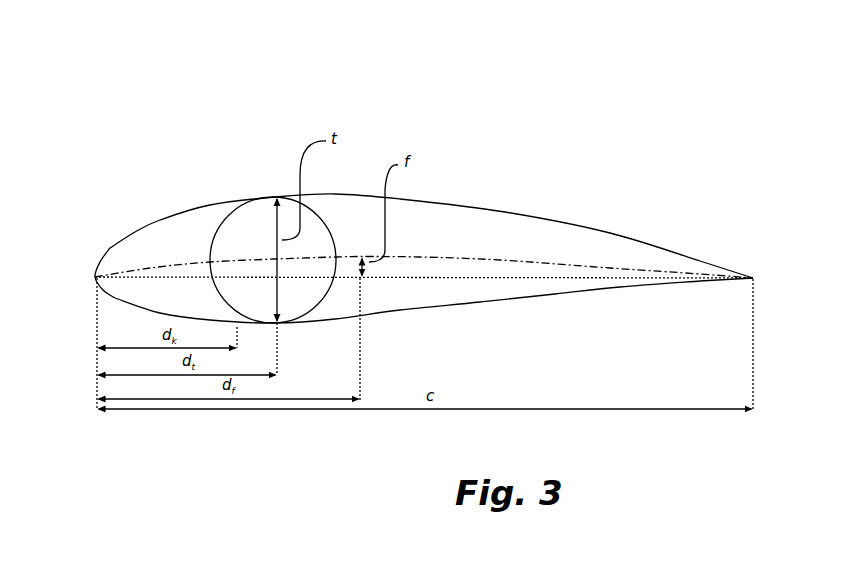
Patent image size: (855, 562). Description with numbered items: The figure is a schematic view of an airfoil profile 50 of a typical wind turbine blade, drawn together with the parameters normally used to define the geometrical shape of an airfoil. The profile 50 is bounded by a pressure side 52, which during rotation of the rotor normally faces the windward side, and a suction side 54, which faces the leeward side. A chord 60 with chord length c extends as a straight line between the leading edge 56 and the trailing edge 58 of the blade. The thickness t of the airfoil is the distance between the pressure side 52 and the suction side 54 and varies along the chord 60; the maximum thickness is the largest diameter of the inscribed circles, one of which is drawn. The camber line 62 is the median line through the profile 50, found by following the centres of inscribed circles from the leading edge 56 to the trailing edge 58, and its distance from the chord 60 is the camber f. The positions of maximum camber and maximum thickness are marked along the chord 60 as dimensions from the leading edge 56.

The airfoil profile 50 is at (411, 218).
The pressure side 52 is at (555, 296).
The suction side 54 is at (505, 211).
The leading edge 56 is at (94, 277).
The trailing edge 58 is at (753, 275).
The chord 60 is at (583, 278).
The camber line 62 is at (415, 257).